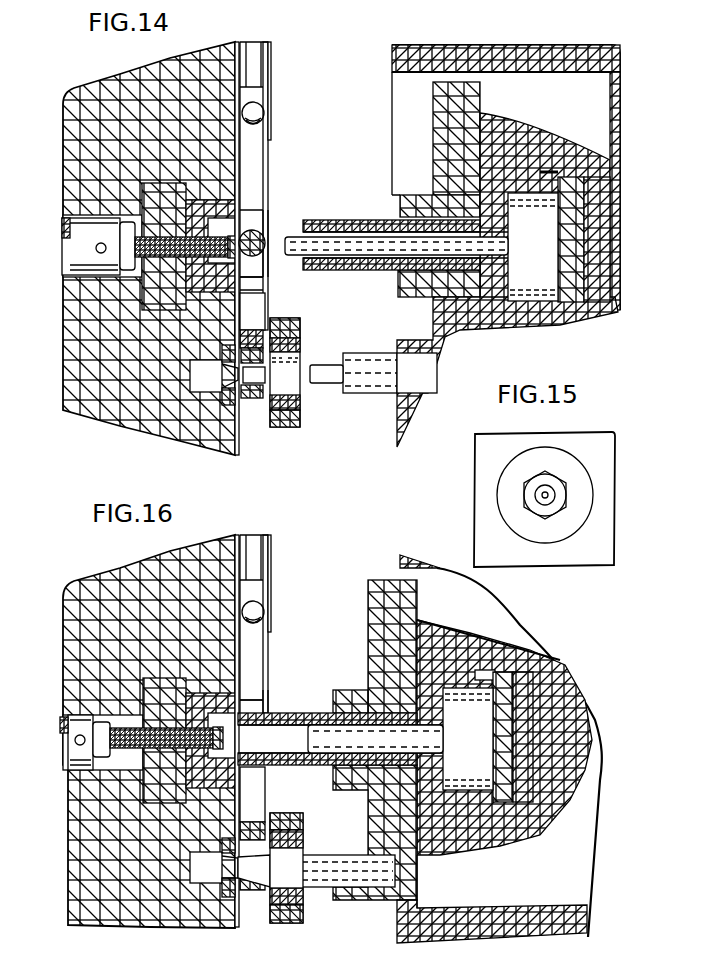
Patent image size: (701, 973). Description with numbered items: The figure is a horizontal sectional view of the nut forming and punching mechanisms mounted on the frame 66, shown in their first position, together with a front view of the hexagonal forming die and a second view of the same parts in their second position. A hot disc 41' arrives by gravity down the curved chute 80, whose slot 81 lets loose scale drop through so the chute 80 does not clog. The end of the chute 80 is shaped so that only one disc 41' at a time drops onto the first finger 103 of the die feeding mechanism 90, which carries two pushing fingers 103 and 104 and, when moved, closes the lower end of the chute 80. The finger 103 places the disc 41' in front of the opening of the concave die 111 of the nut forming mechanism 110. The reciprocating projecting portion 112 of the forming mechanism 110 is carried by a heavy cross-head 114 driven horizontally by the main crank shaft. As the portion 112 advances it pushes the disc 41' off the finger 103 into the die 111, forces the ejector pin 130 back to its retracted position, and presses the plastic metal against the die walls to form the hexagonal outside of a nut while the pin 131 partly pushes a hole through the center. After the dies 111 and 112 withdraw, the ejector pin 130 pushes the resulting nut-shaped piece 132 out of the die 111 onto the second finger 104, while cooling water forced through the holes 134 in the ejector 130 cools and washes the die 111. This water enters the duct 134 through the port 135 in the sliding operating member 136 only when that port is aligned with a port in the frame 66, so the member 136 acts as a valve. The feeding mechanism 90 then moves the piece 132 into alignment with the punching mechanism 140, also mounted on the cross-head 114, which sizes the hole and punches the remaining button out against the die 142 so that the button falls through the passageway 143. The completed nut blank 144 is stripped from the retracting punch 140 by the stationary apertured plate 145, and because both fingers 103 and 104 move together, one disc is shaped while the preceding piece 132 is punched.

In FIG. 14, the frame 66 is at (88, 92).
In FIG. 15, the frame 66 is at (474, 484).
In FIG. 16, the frame 66 is at (86, 586).
In FIG. 14, the chute 80 is at (262, 60).
In FIG. 16, the chute 80 is at (262, 556).
In FIG. 14, the slot 81 is at (251, 42).
In FIG. 16, the slot 81 is at (252, 535).
In FIG. 14, the disc 41' is at (270, 179).
In FIG. 16, the disc 41' is at (272, 612).
In FIG. 14, the die feeding mechanism 90 is at (268, 168).
In FIG. 16, the die feeding mechanism 90 is at (268, 655).
In FIG. 14, the first pushing finger 103 is at (266, 225).
In FIG. 16, the first pushing finger 103 is at (266, 712).
In FIG. 14, the second pushing finger 104 is at (265, 312).
In FIG. 16, the second pushing finger 104 is at (265, 804).
In FIG. 14, the nut forming mechanism 110 is at (320, 231).
In FIG. 16, the nut forming mechanism 110 is at (353, 684).
In FIG. 14, the concave die 111 is at (257, 266).
In FIG. 15, the concave die 111 is at (553, 507).
In FIG. 16, the concave die 111 is at (246, 702).
In FIG. 14, the projecting die portion 112 is at (350, 220).
In FIG. 16, the projecting die portion 112 is at (320, 713).
In FIG. 14, the cross-head 114 is at (576, 107).
In FIG. 16, the cross-head 114 is at (522, 871).
In FIG. 14, the ejector pin 130 is at (75, 270).
In FIG. 15, the ejector pin 130 is at (547, 493).
In FIG. 16, the ejector pin 130 is at (118, 752).
In FIG. 14, the pin 131 is at (292, 255).
In FIG. 16, the pin 131 is at (290, 711).
In FIG. 14, the nut-shaped piece 132 is at (258, 398).
In FIG. 16, the nut-shaped piece 132 is at (258, 762).
In FIG. 14, the holes 134 is at (124, 226).
In FIG. 16, the holes 134 is at (142, 737).
In FIG. 14, the port 135 is at (62, 240).
In FIG. 16, the port 135 is at (68, 748).
In FIG. 14, the sliding operating member 136 is at (64, 218).
In FIG. 16, the sliding operating member 136 is at (62, 717).
In FIG. 14, the punching mechanism 140 is at (371, 389).
In FIG. 16, the punching mechanism 140 is at (321, 894).
In FIG. 14, the die 142 is at (240, 426).
In FIG. 16, the die 142 is at (240, 921).
In FIG. 14, the passageway 143 is at (214, 375).
In FIG. 16, the passageway 143 is at (212, 867).
In FIG. 16, the nut blank 144 is at (245, 892).
In FIG. 14, the apertured plate 145 is at (300, 408).
In FIG. 16, the apertured plate 145 is at (300, 923).